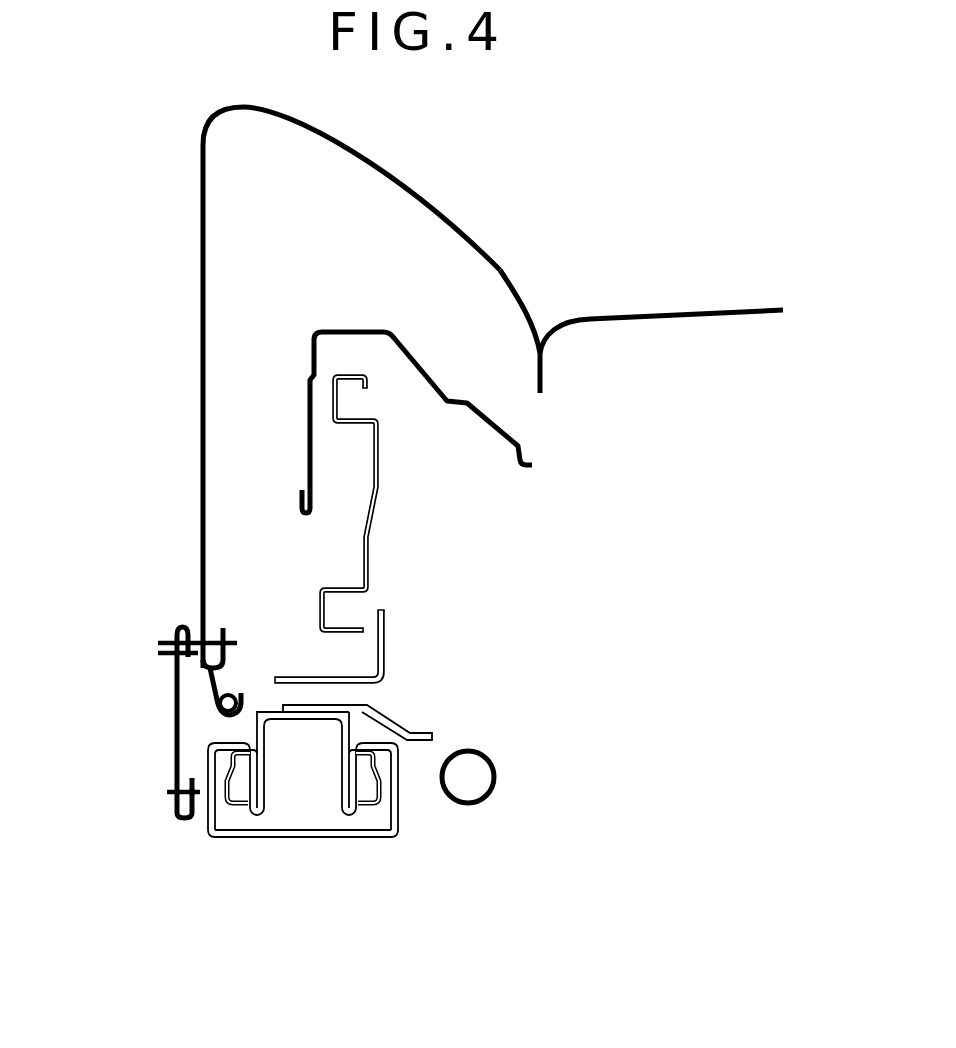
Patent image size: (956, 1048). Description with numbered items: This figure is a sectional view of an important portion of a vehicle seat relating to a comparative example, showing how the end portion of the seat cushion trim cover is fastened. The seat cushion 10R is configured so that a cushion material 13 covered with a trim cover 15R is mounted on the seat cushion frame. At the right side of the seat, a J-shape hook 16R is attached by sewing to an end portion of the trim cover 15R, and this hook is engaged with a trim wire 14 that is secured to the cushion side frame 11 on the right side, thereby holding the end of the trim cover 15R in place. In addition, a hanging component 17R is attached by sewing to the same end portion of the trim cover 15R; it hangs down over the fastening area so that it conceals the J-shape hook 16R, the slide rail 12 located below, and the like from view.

The seat cushion 10R is at (713, 291).
The cushion side frame 11 is at (380, 494).
The slide rail 12 is at (258, 838).
The cushion material 13 is at (497, 310).
The trim wire 14 is at (232, 693).
The trim cover 15R is at (203, 247).
The J-shape hook 16R is at (228, 670).
The hanging component 17R is at (177, 750).